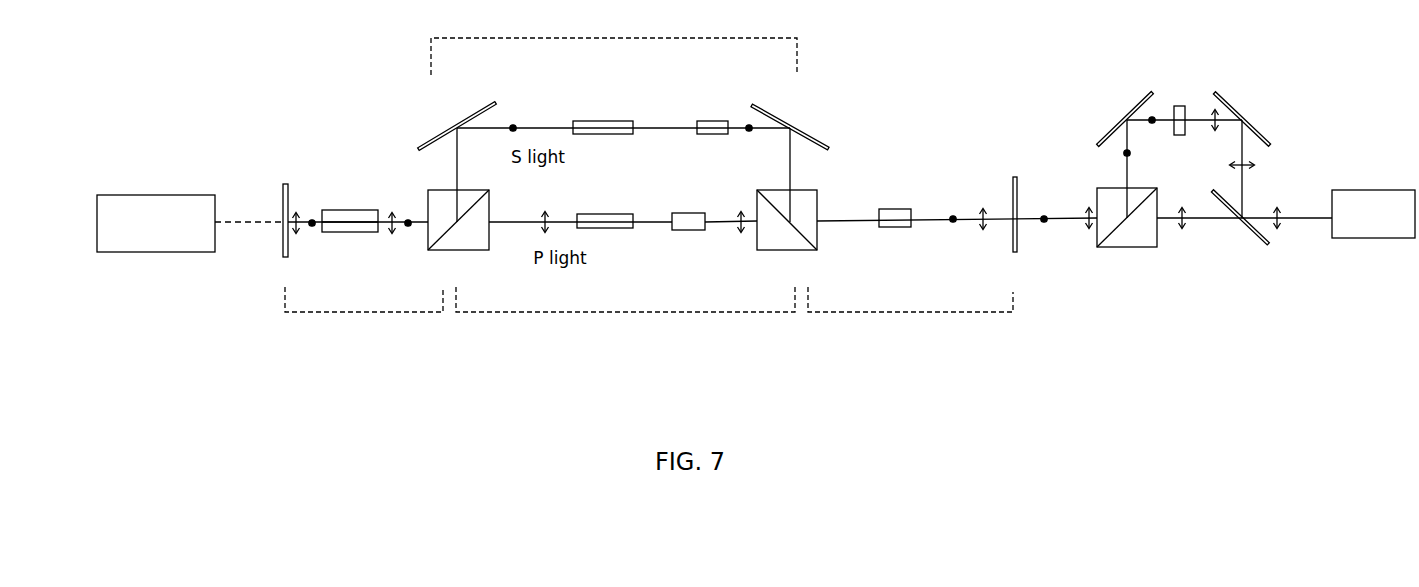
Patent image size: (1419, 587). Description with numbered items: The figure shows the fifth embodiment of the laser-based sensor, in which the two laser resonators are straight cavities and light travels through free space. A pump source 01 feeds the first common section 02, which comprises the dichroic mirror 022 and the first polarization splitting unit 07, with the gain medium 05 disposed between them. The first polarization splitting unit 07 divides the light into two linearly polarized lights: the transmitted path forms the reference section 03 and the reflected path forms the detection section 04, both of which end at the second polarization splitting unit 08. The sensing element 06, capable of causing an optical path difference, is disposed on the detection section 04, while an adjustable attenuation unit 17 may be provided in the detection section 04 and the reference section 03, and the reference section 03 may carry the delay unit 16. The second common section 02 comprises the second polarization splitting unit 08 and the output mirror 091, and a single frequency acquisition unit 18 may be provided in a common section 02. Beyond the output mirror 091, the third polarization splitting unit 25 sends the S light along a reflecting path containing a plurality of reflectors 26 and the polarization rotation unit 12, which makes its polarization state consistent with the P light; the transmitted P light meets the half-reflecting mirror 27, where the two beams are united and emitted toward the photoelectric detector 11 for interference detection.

The pump source 01 is at (158, 166).
The dichroic mirror 022 is at (257, 169).
The gain medium 05 is at (359, 156).
The common section 02 is at (649, 317).
The reference section 03 is at (625, 317).
The detection section 04 is at (614, 45).
The first polarization splitting unit 07 is at (469, 244).
The adjustable attenuation unit 17 is at (613, 174).
The sensing element 06 is at (729, 90).
The delay unit 16 is at (707, 261).
The second polarization splitting unit 08 is at (806, 244).
The single frequency acquisition unit 18 is at (913, 160).
The output mirror 091 is at (1044, 172).
The third polarization splitting unit 25 is at (1141, 241).
The reflector 26 is at (1197, 84).
The polarization rotation unit 12 is at (1207, 79).
The half-reflecting mirror 27 is at (1259, 242).
The photoelectric detector 11 is at (1361, 154).